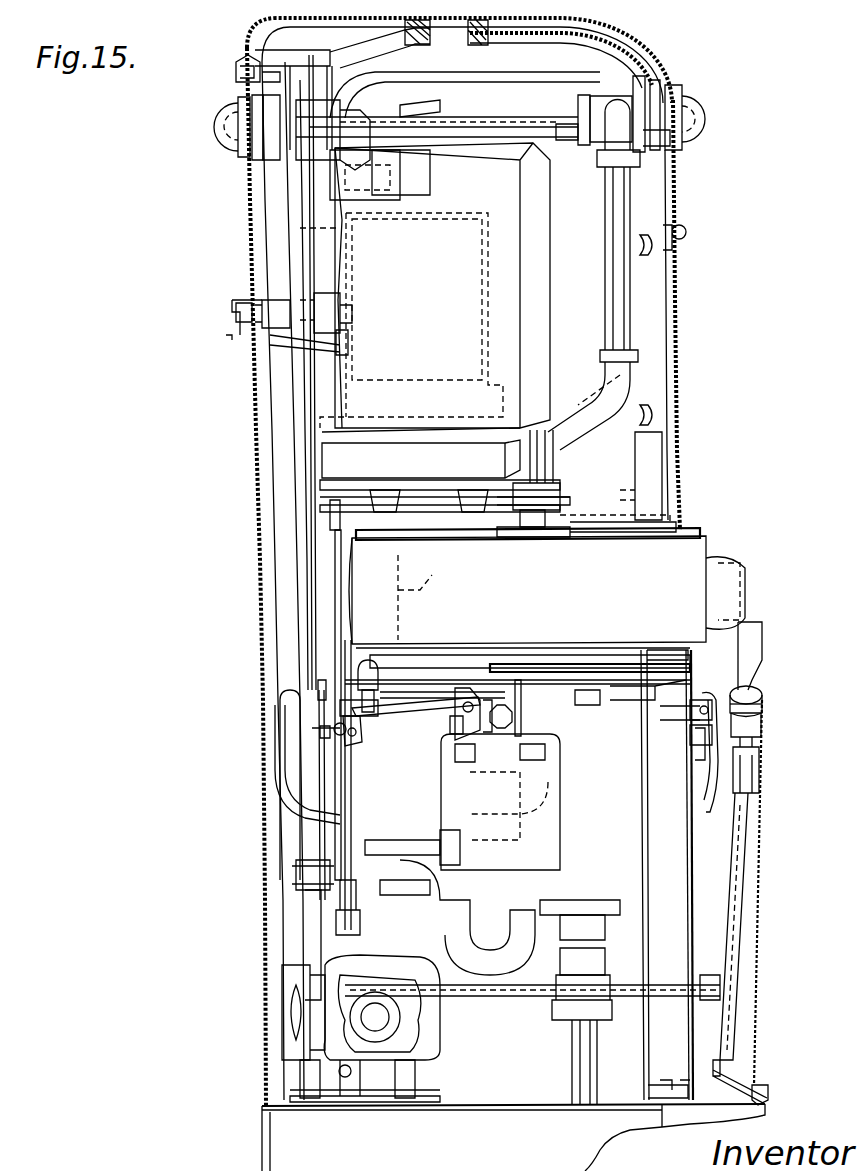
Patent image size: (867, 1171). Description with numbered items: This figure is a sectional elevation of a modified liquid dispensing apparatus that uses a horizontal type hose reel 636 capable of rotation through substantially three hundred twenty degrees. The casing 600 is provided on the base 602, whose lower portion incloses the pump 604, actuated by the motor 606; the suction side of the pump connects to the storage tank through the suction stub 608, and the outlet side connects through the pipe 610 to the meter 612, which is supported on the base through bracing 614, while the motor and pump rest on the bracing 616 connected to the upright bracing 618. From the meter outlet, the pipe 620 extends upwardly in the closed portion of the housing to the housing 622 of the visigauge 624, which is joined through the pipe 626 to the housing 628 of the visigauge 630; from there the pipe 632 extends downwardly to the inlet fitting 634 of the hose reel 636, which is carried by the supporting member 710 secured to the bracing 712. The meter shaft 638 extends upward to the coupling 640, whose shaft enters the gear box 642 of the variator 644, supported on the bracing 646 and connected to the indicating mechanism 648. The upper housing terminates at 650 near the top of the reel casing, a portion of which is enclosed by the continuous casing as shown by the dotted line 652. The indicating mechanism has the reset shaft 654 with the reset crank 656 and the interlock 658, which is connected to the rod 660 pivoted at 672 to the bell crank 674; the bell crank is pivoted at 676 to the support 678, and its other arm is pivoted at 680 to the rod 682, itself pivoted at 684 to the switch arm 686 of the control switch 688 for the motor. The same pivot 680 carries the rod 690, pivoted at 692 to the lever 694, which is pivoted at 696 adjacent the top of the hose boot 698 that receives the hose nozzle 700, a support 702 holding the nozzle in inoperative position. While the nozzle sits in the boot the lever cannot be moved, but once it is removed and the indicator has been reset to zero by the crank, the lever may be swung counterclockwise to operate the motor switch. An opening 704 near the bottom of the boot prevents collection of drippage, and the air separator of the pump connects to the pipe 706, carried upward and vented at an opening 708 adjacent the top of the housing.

The casing 600 is at (262, 838).
The base 602 is at (262, 1130).
The pump 604 is at (525, 975).
The motor 606 is at (548, 775).
The suction stub 608 is at (572, 1062).
The pipe 610 is at (470, 985).
The meter 612 is at (422, 1035).
The bracing 614 is at (418, 1098).
The bracing 616 is at (625, 992).
The upright bracing 618 is at (650, 836).
The pipe 620 is at (312, 904).
The housing 622 is at (427, 85).
The visigauge 624 is at (212, 128).
The pipe 626 is at (505, 108).
The housing 628 is at (606, 102).
The visigauge 630 is at (712, 113).
The pipe 632 is at (635, 292).
The inlet fitting 634 is at (548, 490).
The hose reel 636 is at (700, 540).
The meter shaft 638 is at (350, 792).
The coupling 640 is at (330, 522).
The gear box 642 is at (322, 492).
The variator 644 is at (345, 460).
The bracing 646 is at (650, 470).
The indicating mechanism 648 is at (470, 312).
The terminating portion of housing 650 is at (665, 530).
The dotted line 652 is at (421, 570).
The reset shaft 654 is at (280, 300).
The reset crank 656 is at (238, 312).
The interlock 658 is at (322, 293).
The rod 660 is at (330, 672).
The pivot 672 is at (316, 732).
The bell crank 674 is at (370, 725).
The pivot 676 is at (370, 755).
The support 678 is at (320, 692).
The pivot 680 is at (374, 710).
The rod 682 is at (435, 700).
The pivot 684 is at (500, 695).
The switch arm 686 is at (472, 712).
The control switch 688 is at (522, 702).
The rod 690 is at (590, 668).
The pivot 692 is at (700, 722).
The lever 694 is at (702, 790).
The pivot 696 is at (698, 748).
The hose boot 698 is at (760, 832).
The hose nozzle 700 is at (764, 692).
The support 702 is at (735, 742).
The opening 704 is at (766, 1090).
The pipe 706 is at (290, 782).
The opening 708 is at (238, 78).
The supporting member 710 is at (558, 660).
The bracing 712 is at (625, 672).